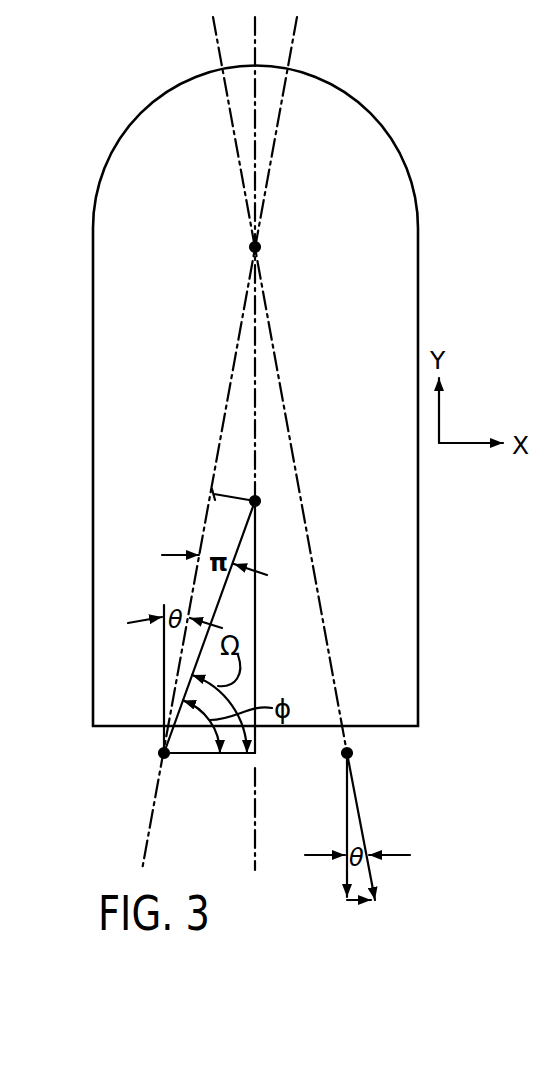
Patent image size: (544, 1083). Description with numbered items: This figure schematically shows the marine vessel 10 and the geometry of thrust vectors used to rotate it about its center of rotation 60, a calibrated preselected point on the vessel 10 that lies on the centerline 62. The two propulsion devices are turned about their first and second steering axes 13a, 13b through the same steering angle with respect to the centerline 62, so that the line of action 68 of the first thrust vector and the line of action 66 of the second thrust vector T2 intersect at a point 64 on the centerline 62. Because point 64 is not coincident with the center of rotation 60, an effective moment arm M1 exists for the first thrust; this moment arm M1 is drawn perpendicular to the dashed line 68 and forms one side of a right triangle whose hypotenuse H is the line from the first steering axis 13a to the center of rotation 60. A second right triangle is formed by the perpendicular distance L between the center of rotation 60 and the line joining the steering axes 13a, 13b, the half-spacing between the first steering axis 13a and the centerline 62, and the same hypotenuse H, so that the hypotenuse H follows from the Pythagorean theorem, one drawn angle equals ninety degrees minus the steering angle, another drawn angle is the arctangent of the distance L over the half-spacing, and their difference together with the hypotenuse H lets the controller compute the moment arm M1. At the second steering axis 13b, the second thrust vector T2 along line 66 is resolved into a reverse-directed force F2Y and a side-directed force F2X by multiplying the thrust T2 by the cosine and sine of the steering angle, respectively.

The vessel 10 is at (403, 170).
The first steering axis 13a is at (160, 753).
The second steering axis 13b is at (352, 755).
The center of rotation 60 is at (262, 501).
The centerline 62 is at (253, 165).
The intersection point 64 is at (250, 247).
The line of action of thrust vector T2 66 is at (235, 127).
The line of action of thrust vector T1 68 is at (277, 127).
The moment arm M1 is at (230, 492).
The hypotenuse H is at (218, 601).
The perpendicular distance L is at (257, 627).
The second thrust vector T2 is at (360, 815).
The side-directed force F2X is at (352, 903).
The reverse-directed force F2Y is at (345, 873).